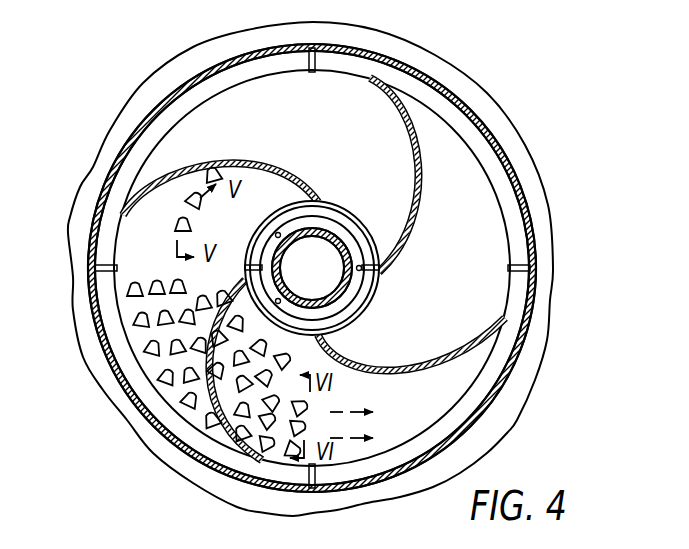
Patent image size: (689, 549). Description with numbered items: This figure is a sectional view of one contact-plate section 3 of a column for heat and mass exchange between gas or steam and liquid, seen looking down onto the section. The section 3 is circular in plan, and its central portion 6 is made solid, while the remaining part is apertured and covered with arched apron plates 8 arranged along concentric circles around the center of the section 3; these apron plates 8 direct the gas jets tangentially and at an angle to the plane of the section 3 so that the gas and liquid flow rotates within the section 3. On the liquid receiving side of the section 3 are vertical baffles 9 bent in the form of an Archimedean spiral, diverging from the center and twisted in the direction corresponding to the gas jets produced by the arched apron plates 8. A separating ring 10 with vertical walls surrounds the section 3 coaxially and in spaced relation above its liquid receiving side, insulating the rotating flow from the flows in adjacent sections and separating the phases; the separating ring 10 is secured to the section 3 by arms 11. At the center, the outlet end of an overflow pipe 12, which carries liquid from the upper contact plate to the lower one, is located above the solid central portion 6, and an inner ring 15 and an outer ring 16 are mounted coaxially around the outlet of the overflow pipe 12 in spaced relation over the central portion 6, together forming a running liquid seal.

The section 3 is at (466, 380).
The central portion 6 is at (354, 286).
The arched apron plate 8 is at (209, 427).
The vertical baffle 9 is at (421, 193).
The separating ring 10 is at (543, 346).
The arm 11 is at (509, 267).
The overflow pipe 12 is at (323, 228).
The inner ring 15 is at (342, 222).
The outer ring 16 is at (363, 232).